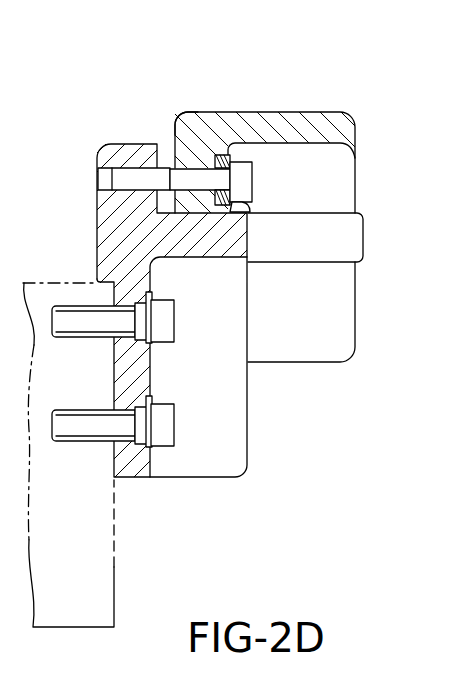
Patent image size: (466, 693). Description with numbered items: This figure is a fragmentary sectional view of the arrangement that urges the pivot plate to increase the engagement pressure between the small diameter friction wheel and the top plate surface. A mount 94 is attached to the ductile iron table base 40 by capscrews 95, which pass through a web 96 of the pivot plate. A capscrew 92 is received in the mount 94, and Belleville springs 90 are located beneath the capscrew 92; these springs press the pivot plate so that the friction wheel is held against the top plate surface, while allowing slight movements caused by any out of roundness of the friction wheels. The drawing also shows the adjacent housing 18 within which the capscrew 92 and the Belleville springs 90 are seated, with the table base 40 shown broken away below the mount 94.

The spindle housing 18 is at (236, 202).
The table base 40 is at (116, 566).
The Belleville springs 90 is at (222, 157).
The capscrew 92 is at (255, 185).
The mount 94 is at (97, 244).
The capscrews 95 is at (174, 329).
The web 96 is at (180, 118).